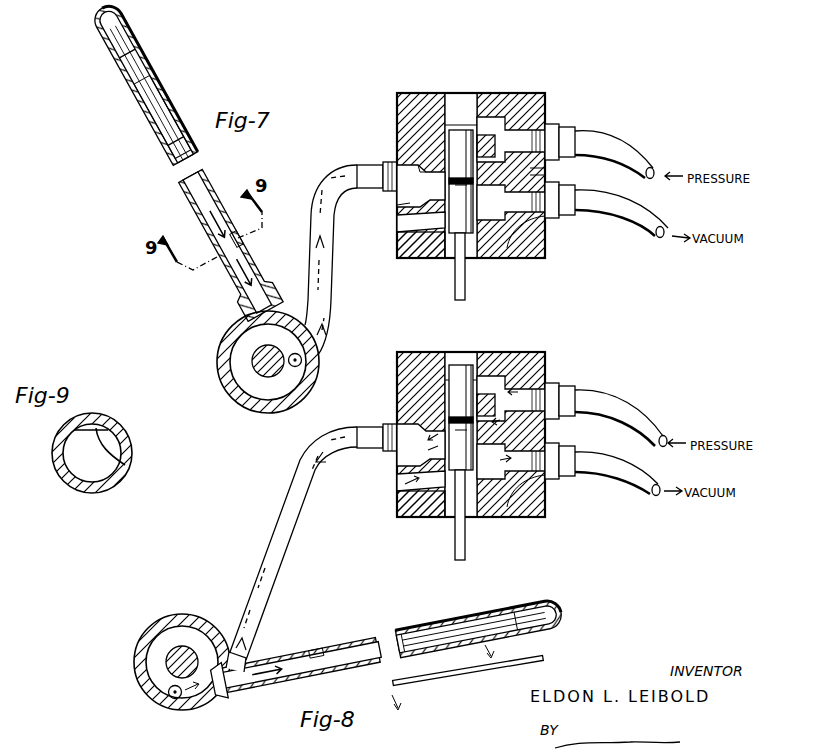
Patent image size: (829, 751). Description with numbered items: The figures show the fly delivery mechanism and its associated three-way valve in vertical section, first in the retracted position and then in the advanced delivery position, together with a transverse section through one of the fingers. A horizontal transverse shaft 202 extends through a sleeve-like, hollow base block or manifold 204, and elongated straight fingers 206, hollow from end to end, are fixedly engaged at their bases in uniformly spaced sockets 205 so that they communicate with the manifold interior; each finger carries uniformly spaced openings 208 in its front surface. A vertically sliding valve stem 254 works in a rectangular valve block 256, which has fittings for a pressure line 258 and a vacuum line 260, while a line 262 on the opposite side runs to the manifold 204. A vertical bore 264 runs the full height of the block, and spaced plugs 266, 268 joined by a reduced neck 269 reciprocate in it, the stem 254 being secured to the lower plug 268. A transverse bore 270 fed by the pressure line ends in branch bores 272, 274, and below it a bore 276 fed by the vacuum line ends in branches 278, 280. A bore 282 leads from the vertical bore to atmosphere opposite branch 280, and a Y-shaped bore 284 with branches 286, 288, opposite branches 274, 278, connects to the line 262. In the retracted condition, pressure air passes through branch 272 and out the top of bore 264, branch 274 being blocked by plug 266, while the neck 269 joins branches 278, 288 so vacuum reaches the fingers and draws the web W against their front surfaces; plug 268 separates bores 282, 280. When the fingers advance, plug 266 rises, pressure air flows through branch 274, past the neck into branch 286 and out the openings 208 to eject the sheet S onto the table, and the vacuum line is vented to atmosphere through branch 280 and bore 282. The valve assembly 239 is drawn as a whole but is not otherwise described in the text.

In FIG. 7, the web W is at (140, 34).
In FIG. 8, the sheet S is at (470, 672).
In FIG. 7, the transverse shaft 202 is at (268, 377).
In FIG. 8, the transverse shaft 202 is at (186, 646).
In FIG. 7, the base block 204 is at (222, 392).
In FIG. 8, the base block 204 is at (158, 620).
In FIG. 8, the sockets 205 is at (212, 706).
In FIG. 7, the fingers 206 is at (232, 288).
In FIG. 8, the fingers 206 is at (280, 660).
In FIG. 9, the fingers 206 is at (68, 486).
In FIG. 7, the openings 208 is at (155, 56).
In FIG. 8, the openings 208 is at (418, 628).
In FIG. 9, the openings 208 is at (126, 470).
In FIG. 7, the valve assembly 239 is at (404, 86).
In FIG. 7, the valve stem 254 is at (452, 282).
In FIG. 8, the valve stem 254 is at (452, 540).
In FIG. 7, the valve block 256 is at (520, 93).
In FIG. 8, the valve block 256 is at (512, 352).
In FIG. 7, the pressure line 258 is at (598, 138).
In FIG. 8, the pressure line 258 is at (606, 398).
In FIG. 7, the vacuum line 260 is at (604, 226).
In FIG. 8, the vacuum line 260 is at (606, 474).
In FIG. 7, the line 262 is at (338, 178).
In FIG. 8, the line 262 is at (338, 430).
In FIG. 7, the vertical bore 264 is at (453, 92).
In FIG. 8, the vertical bore 264 is at (455, 352).
In FIG. 7, the upper plug 266 is at (450, 125).
In FIG. 8, the upper plug 266 is at (455, 380).
In FIG. 7, the lower plug 268 is at (398, 252).
In FIG. 8, the lower plug 268 is at (398, 518).
In FIG. 7, the neck 269 is at (460, 180).
In FIG. 8, the neck 269 is at (460, 422).
In FIG. 7, the transverse bore 270 is at (550, 124).
In FIG. 7, the branch bore 272 is at (492, 110).
In FIG. 7, the branch bore 274 is at (548, 170).
In FIG. 8, the branch bore 274 is at (548, 434).
In FIG. 7, the bore 276 is at (547, 242).
In FIG. 7, the branch bore 278 is at (576, 178).
In FIG. 7, the branch bore 280 is at (508, 260).
In FIG. 8, the branch bore 280 is at (490, 522).
In FIG. 7, the bore 282 is at (398, 228).
In FIG. 8, the bore 282 is at (398, 490).
In FIG. 7, the Y-shaped bore 284 is at (396, 166).
In FIG. 7, the branch bore 286 is at (424, 170).
In FIG. 8, the branch bore 286 is at (420, 425).
In FIG. 7, the branch bore 288 is at (397, 207).